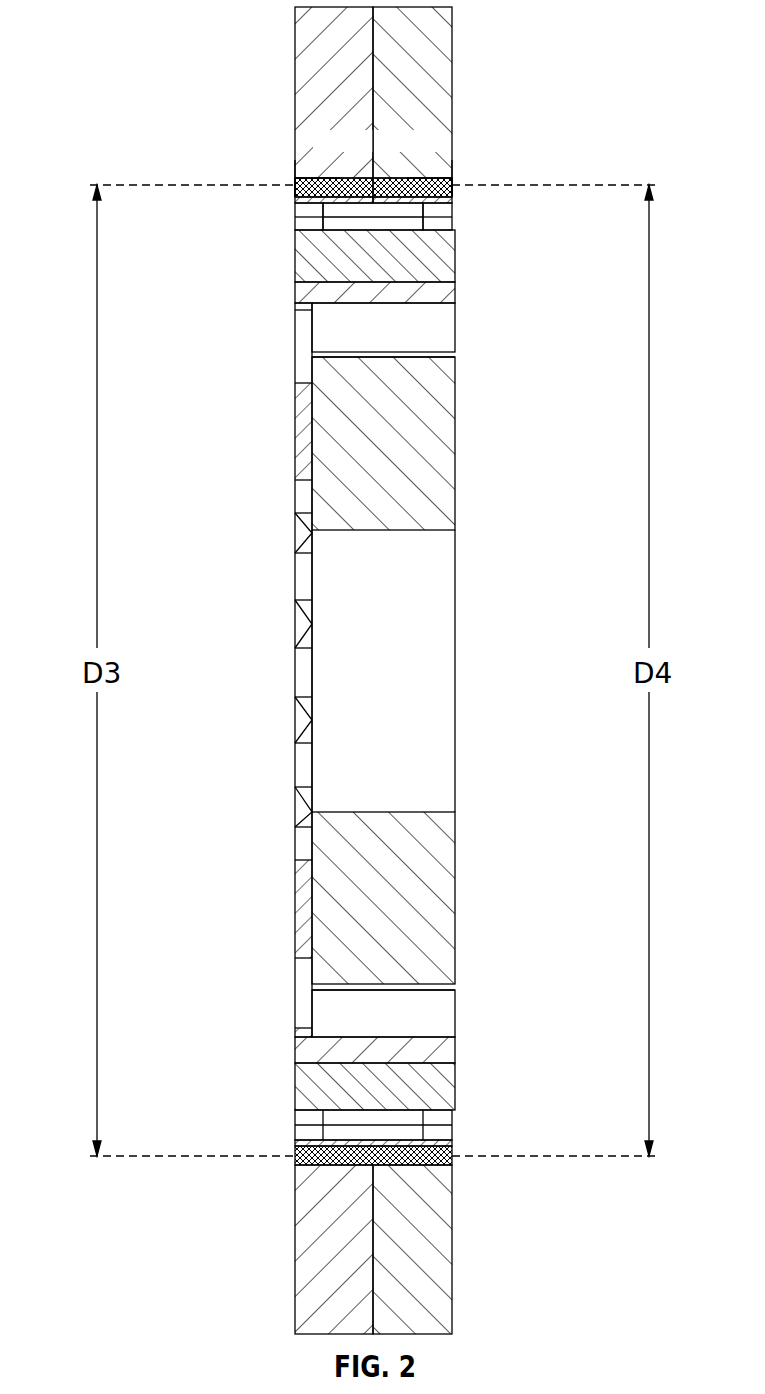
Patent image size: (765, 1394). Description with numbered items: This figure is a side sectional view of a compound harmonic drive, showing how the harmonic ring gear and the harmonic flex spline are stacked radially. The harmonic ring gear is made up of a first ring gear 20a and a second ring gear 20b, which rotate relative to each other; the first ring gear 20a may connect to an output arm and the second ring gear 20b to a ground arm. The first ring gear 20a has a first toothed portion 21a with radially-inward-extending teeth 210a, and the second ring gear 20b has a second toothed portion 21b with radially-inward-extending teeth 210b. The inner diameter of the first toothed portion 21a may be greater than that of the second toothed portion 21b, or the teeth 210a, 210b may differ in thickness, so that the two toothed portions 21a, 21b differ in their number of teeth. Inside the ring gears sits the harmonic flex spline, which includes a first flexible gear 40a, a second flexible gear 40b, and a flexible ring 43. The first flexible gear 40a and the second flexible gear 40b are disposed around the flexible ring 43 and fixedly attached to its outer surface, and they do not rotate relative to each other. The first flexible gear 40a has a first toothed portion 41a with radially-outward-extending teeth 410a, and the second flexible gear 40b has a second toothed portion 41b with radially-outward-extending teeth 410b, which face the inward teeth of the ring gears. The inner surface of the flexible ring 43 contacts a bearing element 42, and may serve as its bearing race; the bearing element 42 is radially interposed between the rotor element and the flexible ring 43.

The first ring gear 20a is at (308, 50).
The second ring gear 20b is at (438, 55).
The radially-inward-extending teeth 210a is at (297, 178).
The radially-inward-extending teeth 210b is at (450, 178).
The first toothed portion 21a is at (292, 180).
The second toothed portion 21b is at (456, 180).
The radially-outward-extending teeth 410a is at (357, 178).
The radially-outward-extending teeth 410b is at (420, 153).
The first toothed portion 41a is at (292, 194).
The second toothed portion 41b is at (456, 194).
The first flexible gear 40a is at (295, 207).
The second flexible gear 40b is at (455, 215).
The flexible ring 43 is at (398, 203).
The bearing element 42 is at (440, 1133).